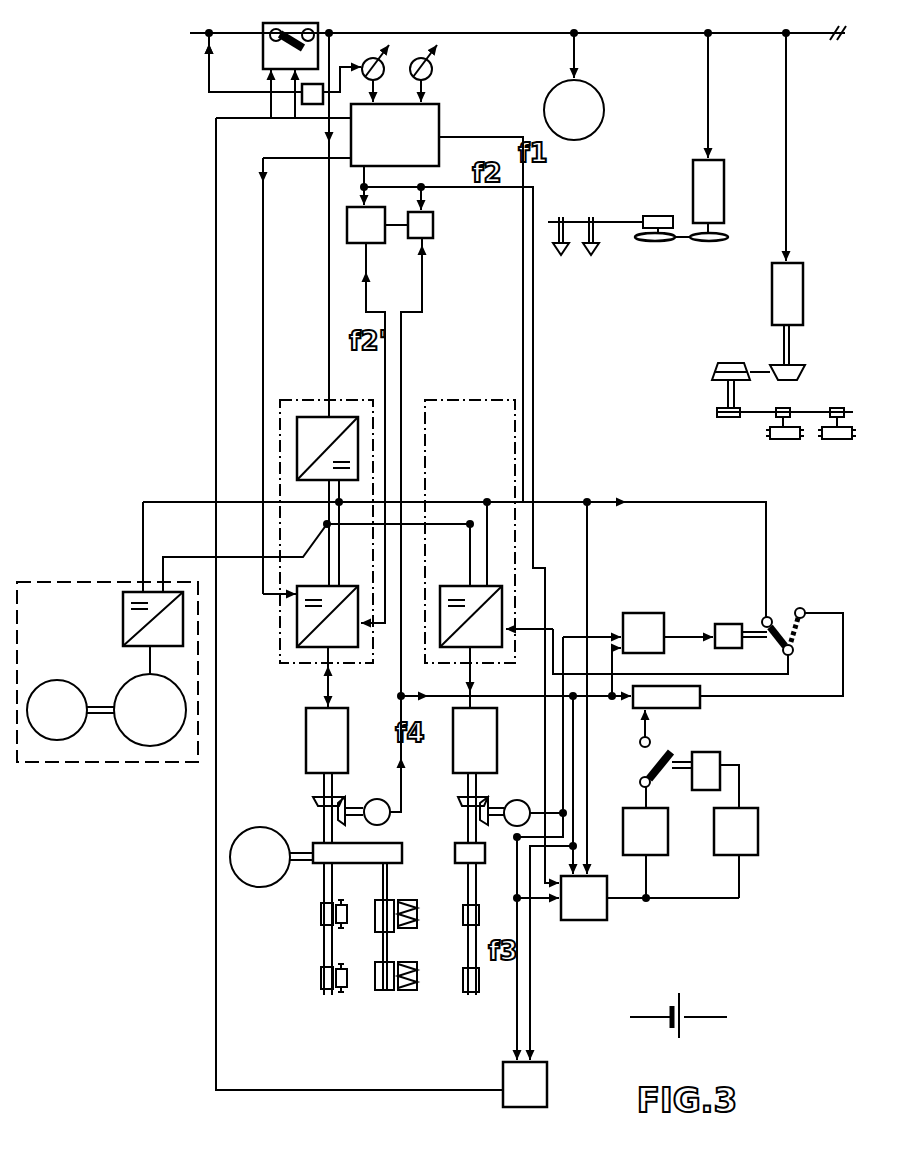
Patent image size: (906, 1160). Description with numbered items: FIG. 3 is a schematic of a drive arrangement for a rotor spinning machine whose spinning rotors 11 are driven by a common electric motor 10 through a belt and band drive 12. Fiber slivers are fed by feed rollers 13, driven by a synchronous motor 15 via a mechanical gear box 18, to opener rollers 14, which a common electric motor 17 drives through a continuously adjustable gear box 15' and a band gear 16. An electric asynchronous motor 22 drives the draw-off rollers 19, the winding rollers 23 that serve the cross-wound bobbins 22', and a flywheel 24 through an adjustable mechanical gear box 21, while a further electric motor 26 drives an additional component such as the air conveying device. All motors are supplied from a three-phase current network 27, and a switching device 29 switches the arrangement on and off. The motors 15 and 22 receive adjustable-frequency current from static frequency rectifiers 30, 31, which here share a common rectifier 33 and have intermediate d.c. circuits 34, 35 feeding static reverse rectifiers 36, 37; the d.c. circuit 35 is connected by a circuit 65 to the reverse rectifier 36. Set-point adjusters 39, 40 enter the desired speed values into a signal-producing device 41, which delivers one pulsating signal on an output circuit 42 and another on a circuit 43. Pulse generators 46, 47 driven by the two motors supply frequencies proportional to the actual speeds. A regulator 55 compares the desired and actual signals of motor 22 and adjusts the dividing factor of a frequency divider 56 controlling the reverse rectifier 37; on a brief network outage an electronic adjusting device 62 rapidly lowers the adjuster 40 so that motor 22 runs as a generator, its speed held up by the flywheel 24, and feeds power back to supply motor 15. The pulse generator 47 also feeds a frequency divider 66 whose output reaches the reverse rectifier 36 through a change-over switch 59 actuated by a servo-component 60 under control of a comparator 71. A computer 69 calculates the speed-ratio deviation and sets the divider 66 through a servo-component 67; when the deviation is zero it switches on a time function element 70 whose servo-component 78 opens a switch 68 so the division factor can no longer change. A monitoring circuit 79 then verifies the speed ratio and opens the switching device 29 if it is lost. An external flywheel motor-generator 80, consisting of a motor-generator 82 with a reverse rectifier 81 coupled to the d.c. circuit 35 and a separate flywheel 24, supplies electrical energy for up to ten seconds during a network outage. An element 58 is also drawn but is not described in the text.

The electric motor 10 is at (722, 188).
The spinning rotors 11 is at (593, 259).
The belt and band drive 12 is at (661, 246).
The feed rollers 13 is at (481, 988).
The opener rollers 14 is at (830, 441).
The synchronous motor 15 is at (475, 740).
The continuously adjustable gear box 15' is at (739, 355).
The band gear 16 is at (727, 419).
The electric motor 17 is at (804, 296).
The mechanical gear box 18 is at (456, 852).
The draw-off rollers 19 is at (320, 912).
The adjustable mechanical gear box 21 is at (365, 863).
The electric asynchronous motor 22 is at (327, 740).
The cross-wound bobbins 22' is at (426, 971).
The winding rollers 23 is at (375, 985).
The flywheel 24 is at (170, 783).
The electric motor 26 is at (574, 86).
The three-phase current network 27 is at (816, 42).
The switching device 29 is at (263, 62).
The static frequency rectifier 30 is at (477, 396).
The static frequency rectifier 31 is at (289, 396).
The rectifier 33 is at (300, 455).
The intermediate rectifier circuit 34 is at (474, 535).
The intermediate d.c. circuit 35 is at (330, 528).
The static reverse rectifier 36 is at (503, 612).
The static reverse rectifier 37 is at (297, 618).
The set-point adjuster 39 is at (432, 62).
The set-point adjuster 40 is at (363, 63).
The signal-producing device 41 is at (395, 135).
The output circuit 42 is at (358, 176).
The circuit 43 is at (491, 137).
The pulse generator 46 is at (514, 800).
The pulse generator 47 is at (372, 800).
The rotational-speed regulator 55 is at (433, 238).
The frequency divider 56 is at (358, 245).
The battery 58 is at (682, 1000).
The change-over switch 59 is at (790, 612).
The servo-component 60 is at (728, 624).
The electronic adjusting device 62 is at (312, 106).
The circuit 65 is at (452, 506).
The frequency divider 66 is at (702, 704).
The servo-component 67 is at (665, 838).
The switch 68 is at (645, 764).
The computer 69 is at (590, 920).
The time function element 70 is at (758, 825).
The comparator 71 is at (653, 622).
The servo-component 78 is at (720, 760).
The monitoring circuit 79 is at (503, 1078).
The external flywheel motor-generator 80 is at (55, 582).
The reverse rectifier 81 is at (123, 616).
The motor-generator 82 is at (128, 742).